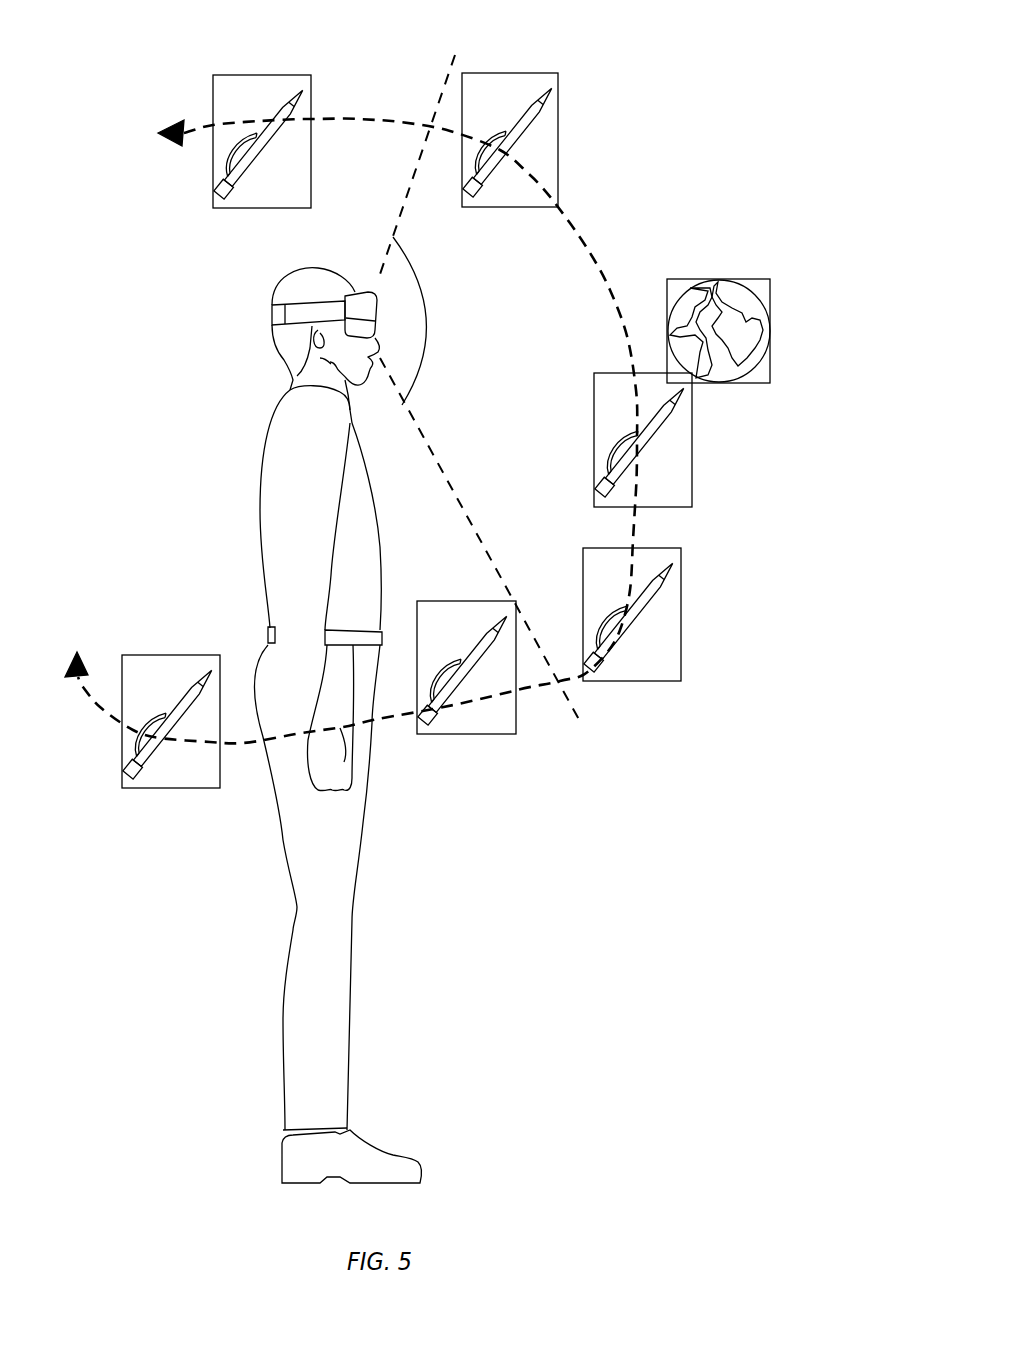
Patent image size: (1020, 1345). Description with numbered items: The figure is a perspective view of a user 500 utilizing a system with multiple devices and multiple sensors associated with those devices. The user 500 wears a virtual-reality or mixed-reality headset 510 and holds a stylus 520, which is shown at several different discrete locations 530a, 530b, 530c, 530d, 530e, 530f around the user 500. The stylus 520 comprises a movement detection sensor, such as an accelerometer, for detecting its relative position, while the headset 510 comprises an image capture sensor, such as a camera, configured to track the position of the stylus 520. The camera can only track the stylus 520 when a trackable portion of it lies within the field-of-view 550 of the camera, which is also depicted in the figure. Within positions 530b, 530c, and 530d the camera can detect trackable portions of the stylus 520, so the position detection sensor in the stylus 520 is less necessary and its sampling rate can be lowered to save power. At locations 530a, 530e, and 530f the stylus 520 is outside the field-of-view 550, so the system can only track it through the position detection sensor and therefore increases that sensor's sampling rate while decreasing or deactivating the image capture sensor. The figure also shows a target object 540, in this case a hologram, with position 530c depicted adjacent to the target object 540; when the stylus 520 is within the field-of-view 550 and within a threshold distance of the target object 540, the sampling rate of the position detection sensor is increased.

The user 500 is at (283, 477).
The virtual-reality or mixed-reality headset 510 is at (368, 300).
The stylus 520 is at (279, 110).
The discrete location of the stylus 530a is at (288, 73).
The discrete location of the stylus 530b is at (538, 73).
The discrete location of the stylus 530c is at (693, 437).
The discrete location of the stylus 530d is at (652, 681).
The discrete location of the stylus 530e is at (480, 734).
The discrete location of the stylus 530f is at (187, 788).
The target object 540 is at (757, 279).
The field-of-view 550 is at (427, 300).